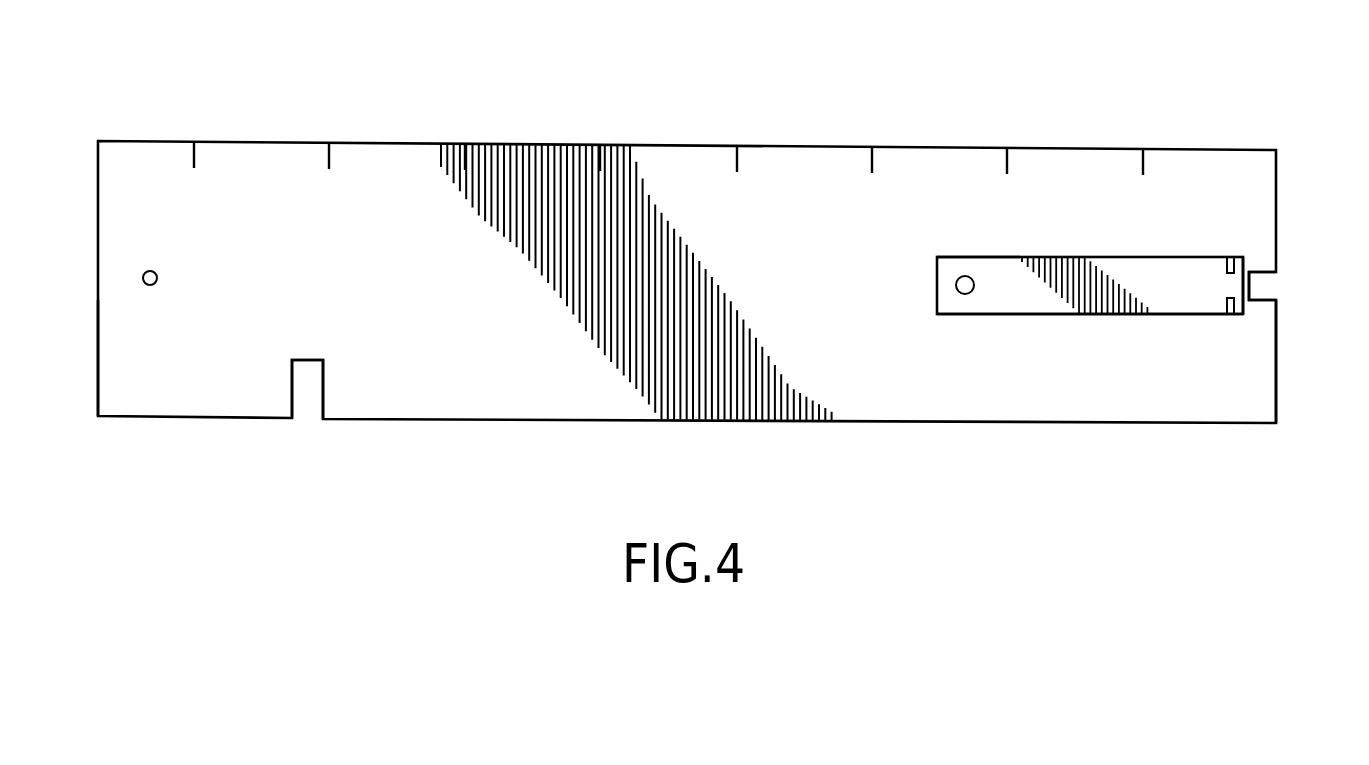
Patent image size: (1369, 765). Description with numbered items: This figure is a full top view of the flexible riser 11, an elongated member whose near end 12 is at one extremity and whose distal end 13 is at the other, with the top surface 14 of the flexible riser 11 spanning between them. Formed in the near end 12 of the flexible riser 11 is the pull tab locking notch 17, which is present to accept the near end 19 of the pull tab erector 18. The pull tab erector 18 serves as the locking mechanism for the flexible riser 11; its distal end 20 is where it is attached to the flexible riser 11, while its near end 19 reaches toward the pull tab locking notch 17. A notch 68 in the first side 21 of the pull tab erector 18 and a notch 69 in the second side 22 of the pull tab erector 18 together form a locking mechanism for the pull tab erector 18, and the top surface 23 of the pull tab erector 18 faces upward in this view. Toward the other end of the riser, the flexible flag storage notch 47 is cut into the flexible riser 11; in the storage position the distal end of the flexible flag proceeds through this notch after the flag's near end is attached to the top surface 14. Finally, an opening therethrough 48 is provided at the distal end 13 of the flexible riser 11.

The flexible riser 11 is at (389, 182).
The near end of the flexible riser 12 is at (1262, 350).
The distal end of the flexible riser 13 is at (133, 382).
The top surface of the flexible riser 14 is at (477, 365).
The pull tab locking notch 17 is at (1263, 287).
The pull tab erector 18 is at (1182, 285).
The near end of the pull tab erector 19 is at (1237, 255).
The distal end of the pull tab erector 20 is at (936, 278).
The first side of the pull tab erector 21 is at (1023, 318).
The second side of the pull tab erector 22 is at (1070, 258).
The top surface of the pull tab erector 23 is at (1003, 270).
The flexible flag storage notch 47 is at (307, 377).
The opening therethrough 48 is at (143, 278).
The notch in first side of the pull tab erector 68 is at (1232, 312).
The notch in second side of the pull tab erector 69 is at (1232, 257).